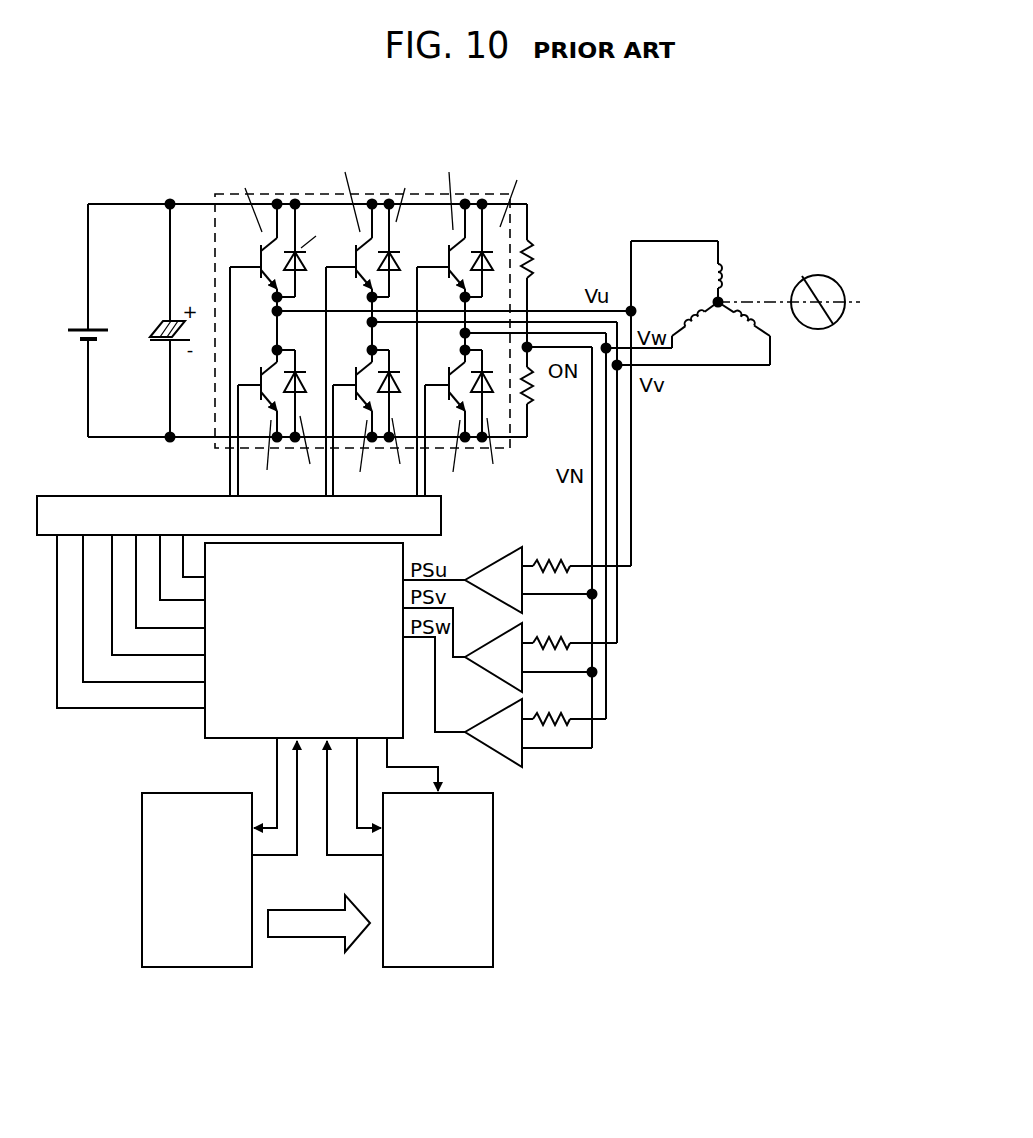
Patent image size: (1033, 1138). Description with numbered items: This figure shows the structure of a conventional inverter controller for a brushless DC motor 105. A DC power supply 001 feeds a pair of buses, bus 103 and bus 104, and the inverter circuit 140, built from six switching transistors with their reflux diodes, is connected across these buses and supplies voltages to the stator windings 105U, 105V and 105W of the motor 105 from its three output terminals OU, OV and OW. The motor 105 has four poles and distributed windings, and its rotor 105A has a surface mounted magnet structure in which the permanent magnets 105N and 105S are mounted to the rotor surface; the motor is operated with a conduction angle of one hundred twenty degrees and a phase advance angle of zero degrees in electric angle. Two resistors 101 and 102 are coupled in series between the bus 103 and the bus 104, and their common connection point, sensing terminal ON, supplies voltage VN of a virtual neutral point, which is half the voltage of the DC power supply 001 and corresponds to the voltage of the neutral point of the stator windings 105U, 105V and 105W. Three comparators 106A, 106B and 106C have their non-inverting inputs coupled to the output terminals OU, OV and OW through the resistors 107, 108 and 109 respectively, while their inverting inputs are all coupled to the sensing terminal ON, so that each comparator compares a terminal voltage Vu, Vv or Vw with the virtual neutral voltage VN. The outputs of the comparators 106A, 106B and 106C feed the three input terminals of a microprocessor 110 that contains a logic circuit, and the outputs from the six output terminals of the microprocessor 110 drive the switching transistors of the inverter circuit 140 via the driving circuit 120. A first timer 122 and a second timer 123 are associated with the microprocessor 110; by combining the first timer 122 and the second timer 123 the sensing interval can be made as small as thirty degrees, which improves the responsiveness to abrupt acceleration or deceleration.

The DC power supply 001 is at (77, 325).
The bus 103 is at (140, 203).
The bus 104 is at (129, 440).
The inverter circuit 140 is at (287, 193).
The resistor 101 is at (537, 250).
The resistor 102 is at (536, 406).
The brushless DC motor 105 is at (733, 299).
The stator winding 105U is at (710, 280).
The stator winding 105V is at (767, 327).
The stator winding 105W is at (705, 324).
The rotor 105A is at (816, 299).
The permanent magnet 105N is at (806, 285).
The permanent magnet 105S is at (828, 334).
The comparator 106A is at (500, 558).
The comparator 106B is at (492, 647).
The comparator 106C is at (484, 718).
The resistor 107 is at (552, 556).
The resistor 108 is at (553, 636).
The resistor 109 is at (553, 712).
The microprocessor 110 is at (205, 726).
The driving circuit 120 is at (85, 496).
The first timer 122 is at (195, 968).
The second timer 123 is at (440, 968).